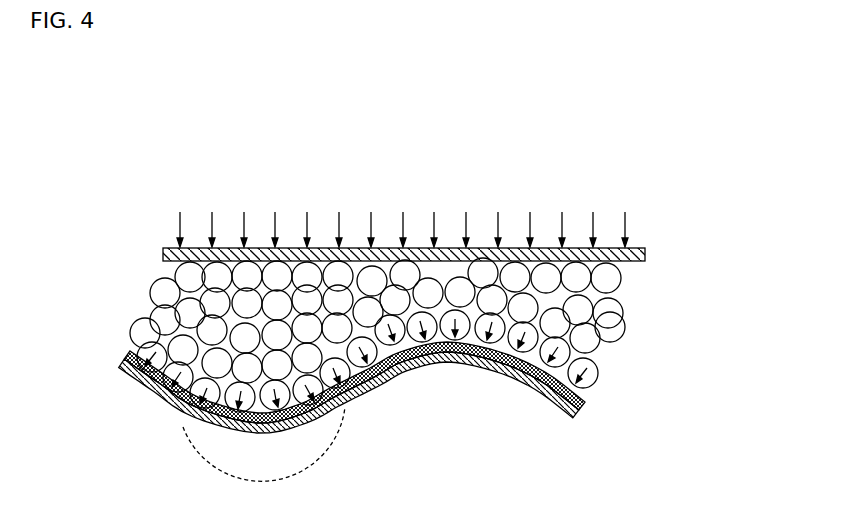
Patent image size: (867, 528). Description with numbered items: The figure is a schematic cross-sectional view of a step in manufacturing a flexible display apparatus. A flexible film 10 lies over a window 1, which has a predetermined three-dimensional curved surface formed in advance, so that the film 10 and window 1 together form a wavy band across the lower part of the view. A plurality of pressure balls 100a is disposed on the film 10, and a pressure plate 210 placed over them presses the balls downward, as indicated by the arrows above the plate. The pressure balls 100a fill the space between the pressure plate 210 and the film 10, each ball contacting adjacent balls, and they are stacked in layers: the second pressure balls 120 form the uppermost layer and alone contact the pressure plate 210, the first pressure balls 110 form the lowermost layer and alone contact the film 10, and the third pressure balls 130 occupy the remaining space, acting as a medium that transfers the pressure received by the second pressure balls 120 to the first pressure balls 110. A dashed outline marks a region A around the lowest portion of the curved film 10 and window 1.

The pressure plate 210 is at (167, 254).
The second pressure balls 120 is at (413, 272).
The third pressure balls 130 is at (593, 338).
The first pressure balls 110 is at (572, 348).
The pressure balls 100a is at (720, 183).
The film 10 is at (585, 400).
The window 1 is at (578, 410).
The region A is at (263, 457).